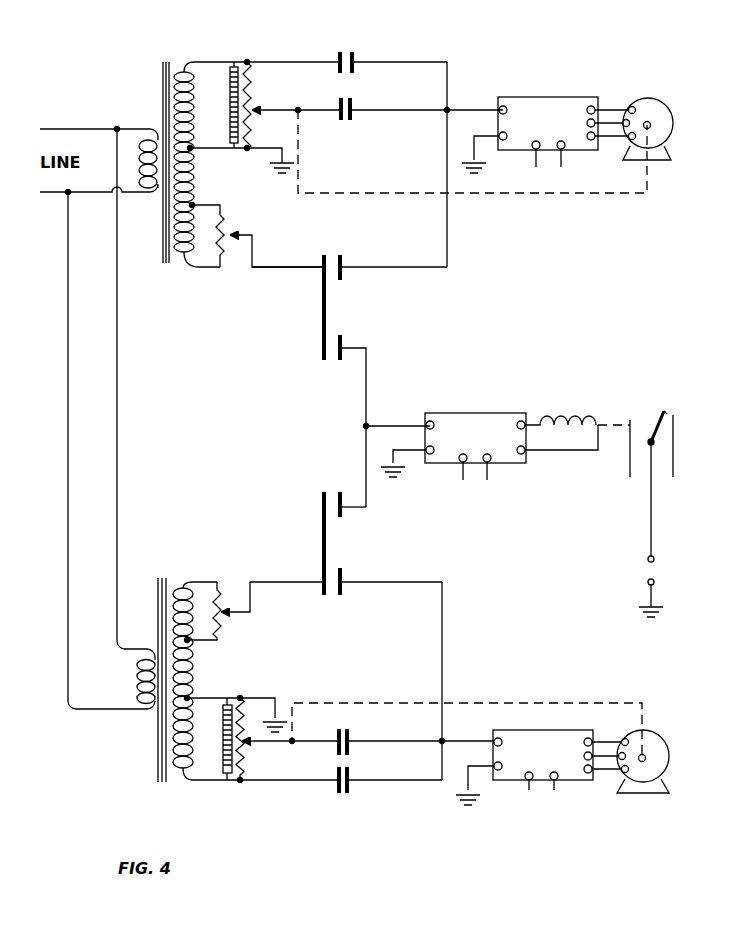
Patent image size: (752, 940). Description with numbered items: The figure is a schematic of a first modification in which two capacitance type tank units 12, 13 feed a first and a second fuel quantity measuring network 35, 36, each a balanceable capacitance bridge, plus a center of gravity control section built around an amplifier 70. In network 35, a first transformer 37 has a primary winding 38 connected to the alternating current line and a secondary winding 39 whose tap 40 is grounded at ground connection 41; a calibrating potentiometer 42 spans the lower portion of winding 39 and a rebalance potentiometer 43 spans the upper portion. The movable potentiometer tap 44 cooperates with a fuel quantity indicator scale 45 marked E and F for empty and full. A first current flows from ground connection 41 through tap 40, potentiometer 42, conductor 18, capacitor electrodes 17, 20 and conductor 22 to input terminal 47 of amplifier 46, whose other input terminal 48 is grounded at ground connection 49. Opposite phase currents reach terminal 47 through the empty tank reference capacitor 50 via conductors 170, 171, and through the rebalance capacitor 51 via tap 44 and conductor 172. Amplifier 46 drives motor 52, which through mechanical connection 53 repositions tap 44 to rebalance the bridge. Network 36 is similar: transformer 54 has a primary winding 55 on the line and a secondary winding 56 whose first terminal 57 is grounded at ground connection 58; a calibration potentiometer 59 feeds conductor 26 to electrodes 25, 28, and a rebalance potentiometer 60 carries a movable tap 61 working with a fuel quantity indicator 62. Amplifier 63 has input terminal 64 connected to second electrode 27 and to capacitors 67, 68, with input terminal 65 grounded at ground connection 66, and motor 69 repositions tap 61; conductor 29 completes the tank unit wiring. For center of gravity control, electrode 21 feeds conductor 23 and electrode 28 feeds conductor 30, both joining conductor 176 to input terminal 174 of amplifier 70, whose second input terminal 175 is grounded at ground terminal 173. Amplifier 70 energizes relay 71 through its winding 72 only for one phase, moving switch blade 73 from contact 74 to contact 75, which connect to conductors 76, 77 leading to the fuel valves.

The tank unit 12 is at (308, 317).
The tank unit 13 is at (315, 560).
The capacitor electrode 17 is at (322, 286).
The conductor 18 is at (290, 265).
The second capacitor electrode 20 is at (342, 276).
The electrode 21 is at (343, 345).
The conductor 22 is at (401, 265).
The conductor 23 is at (367, 360).
The electrode 25 is at (322, 506).
The conductor 26 is at (296, 583).
The second electrode 27 is at (343, 590).
The electrode 28 is at (342, 495).
The conductor 29 is at (388, 583).
The conductor 30 is at (343, 512).
The first fuel quantity measuring network 35 is at (452, 57).
The second fuel quantity measuring network 36 is at (469, 584).
The first transformer 37 is at (157, 88).
The primary winding 38 is at (136, 164).
The secondary winding 39 is at (199, 178).
The tap 40 is at (193, 149).
The ground connection 41 is at (278, 165).
The calibrating potentiometer 42 is at (234, 222).
The rebalance potentiometer 43 is at (258, 95).
The movable potentiometer tap 44 is at (255, 112).
The fuel quantity indicator scale 45 is at (230, 96).
The amplifier 46 is at (554, 97).
The input terminal 47 is at (500, 108).
The input terminal 48 is at (500, 134).
The ground connection 49 is at (480, 165).
The empty tank reference capacitor 50 is at (355, 55).
The rebalance capacitor 51 is at (352, 104).
The motor 52 is at (668, 106).
The mechanical connection 53 is at (580, 194).
The transformer 54 is at (156, 600).
The primary winding 55 is at (135, 672).
The secondary winding 56 is at (195, 668).
The first terminal 57 is at (190, 697).
The ground connection 58 is at (273, 720).
The calibration potentiometer 59 is at (223, 616).
The rebalance potentiometer 60 is at (247, 780).
The movable potentiometer tap 61 is at (250, 744).
The fuel quantity indicator 62 is at (224, 737).
The amplifier 63 is at (558, 730).
The input terminal 64 is at (494, 741).
The input terminal 65 is at (494, 765).
The ground connection 66 is at (468, 795).
The rebalance capacitor 67 is at (349, 741).
The capacitor 68 is at (350, 774).
The motor 69 is at (657, 735).
The amplifier 70 is at (494, 413).
The relay 71 is at (561, 414).
The relay winding 72 is at (566, 437).
The movable switch blade 73 is at (667, 413).
The contact 74 is at (655, 446).
The contact 75 is at (640, 418).
The conductor 76 is at (674, 472).
The conductor 77 is at (631, 460).
The conductor 170 is at (304, 60).
The conductor 171 is at (428, 60).
The conductor 172 is at (428, 108).
The ground terminal 173 is at (402, 469).
The input terminal 174 is at (418, 420).
The second input terminal 175 is at (426, 449).
The conductor 176 is at (402, 424).